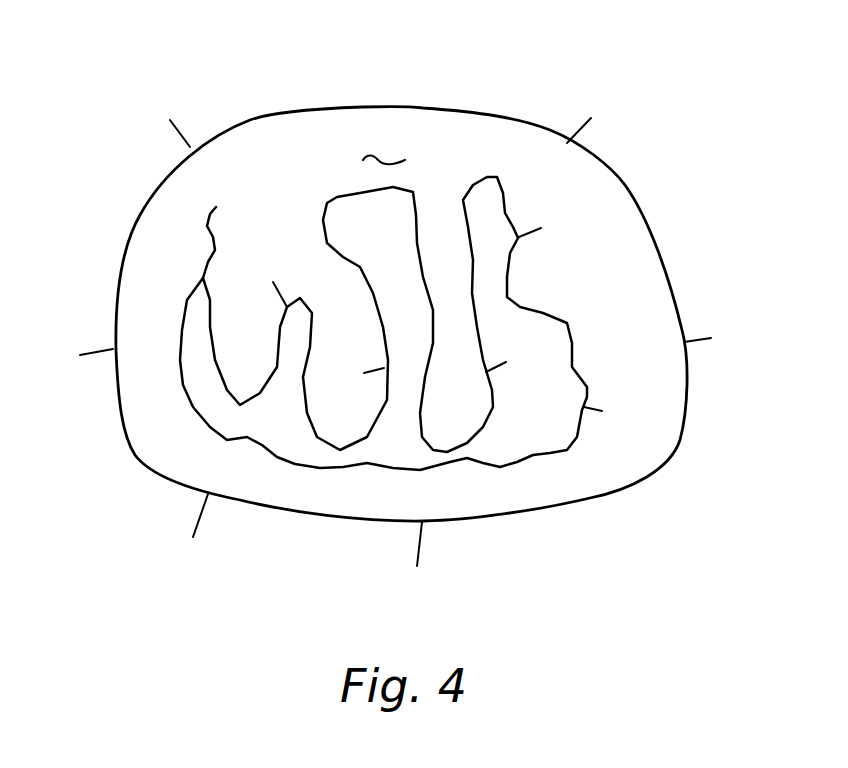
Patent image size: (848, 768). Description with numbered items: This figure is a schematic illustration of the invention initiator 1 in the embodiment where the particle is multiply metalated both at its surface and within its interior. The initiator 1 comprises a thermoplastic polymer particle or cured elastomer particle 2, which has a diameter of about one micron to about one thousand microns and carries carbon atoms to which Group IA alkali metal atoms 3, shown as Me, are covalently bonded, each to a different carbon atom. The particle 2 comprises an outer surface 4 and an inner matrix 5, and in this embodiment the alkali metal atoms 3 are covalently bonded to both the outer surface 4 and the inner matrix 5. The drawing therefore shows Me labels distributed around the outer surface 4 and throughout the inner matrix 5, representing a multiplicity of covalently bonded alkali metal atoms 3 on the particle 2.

The initiator 1 is at (396, 316).
The particle 2 is at (657, 255).
The alkali metal atoms 3 is at (641, 92).
The outer surface 4 is at (293, 113).
The inner matrix 5 is at (539, 459).